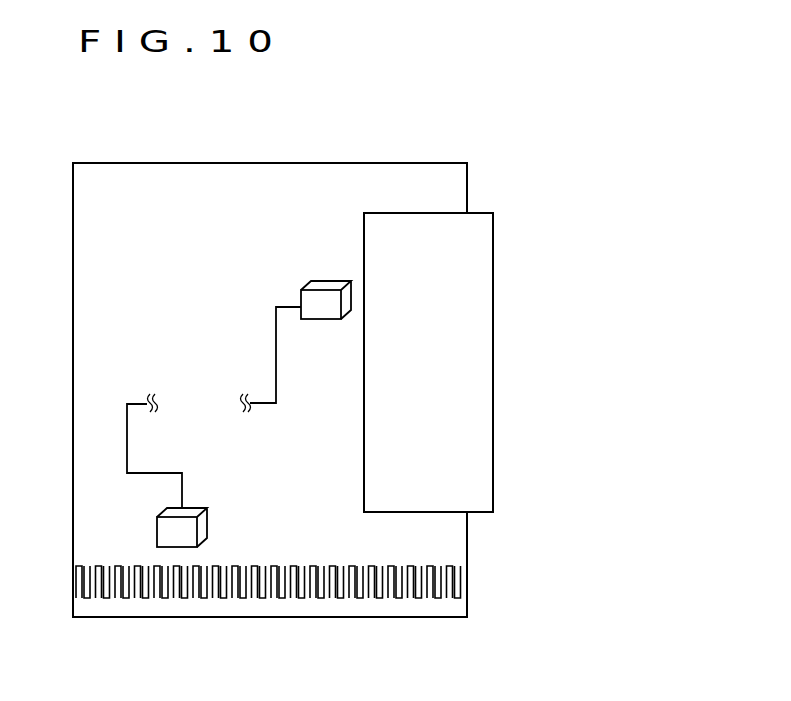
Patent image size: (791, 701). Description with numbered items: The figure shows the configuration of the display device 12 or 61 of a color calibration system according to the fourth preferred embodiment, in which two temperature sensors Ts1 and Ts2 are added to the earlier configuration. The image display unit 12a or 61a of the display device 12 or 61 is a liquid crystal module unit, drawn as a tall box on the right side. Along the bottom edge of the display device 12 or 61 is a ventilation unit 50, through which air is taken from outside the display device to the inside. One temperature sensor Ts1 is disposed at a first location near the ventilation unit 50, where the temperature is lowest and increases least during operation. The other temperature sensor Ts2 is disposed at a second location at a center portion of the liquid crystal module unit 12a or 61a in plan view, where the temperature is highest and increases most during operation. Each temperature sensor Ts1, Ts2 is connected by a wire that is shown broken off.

The display device 12 is at (360, 366).
The display device 61 is at (360, 366).
The image display unit 12a is at (505, 362).
The image display unit 61a is at (480, 392).
The temperature sensor Ts1 is at (200, 529).
The temperature sensor Ts2 is at (325, 288).
The ventilation unit 50 is at (444, 600).